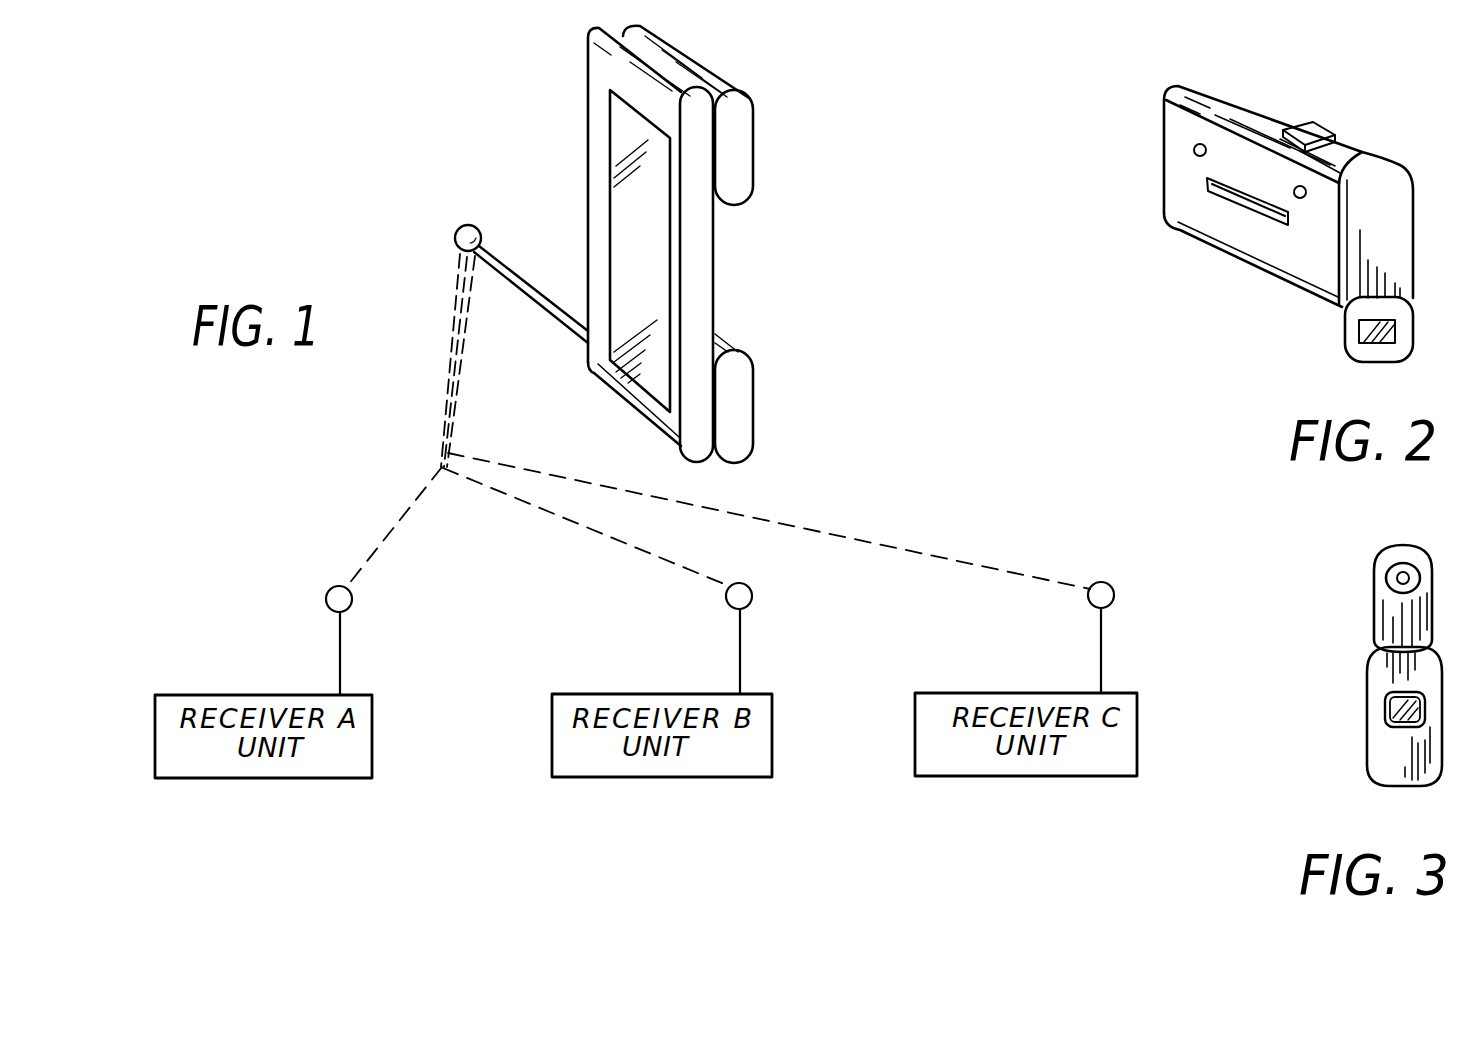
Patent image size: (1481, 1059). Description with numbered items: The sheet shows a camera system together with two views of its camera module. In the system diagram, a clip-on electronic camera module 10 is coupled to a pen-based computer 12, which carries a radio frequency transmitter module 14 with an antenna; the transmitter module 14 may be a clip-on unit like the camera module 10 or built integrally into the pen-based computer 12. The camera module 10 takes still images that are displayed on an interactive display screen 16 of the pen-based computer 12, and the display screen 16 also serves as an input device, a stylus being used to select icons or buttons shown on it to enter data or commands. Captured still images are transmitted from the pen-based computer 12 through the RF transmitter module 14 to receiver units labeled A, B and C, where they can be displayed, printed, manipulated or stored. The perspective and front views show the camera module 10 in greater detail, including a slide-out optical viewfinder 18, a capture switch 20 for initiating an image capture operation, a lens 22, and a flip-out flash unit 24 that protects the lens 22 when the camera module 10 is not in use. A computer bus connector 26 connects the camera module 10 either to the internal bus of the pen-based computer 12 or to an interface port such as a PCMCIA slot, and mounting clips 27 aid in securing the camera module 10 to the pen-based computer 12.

In FIG. 1, the electronic camera module 10 is at (778, 186).
In FIG. 2, the electronic camera module 10 is at (1222, 281).
In FIG. 1, the pen-based computer 12 is at (536, 159).
In FIG. 1, the radio frequency transmitter module 14 is at (775, 415).
In FIG. 1, the interactive display screen 16 is at (651, 261).
In FIG. 2, the slide-out optical viewfinder 18 is at (1410, 320).
In FIG. 2, the capture switch 20 is at (1313, 124).
In FIG. 3, the lens 22 is at (1385, 703).
In FIG. 3, the flip-out flash unit 24 is at (1388, 576).
In FIG. 2, the computer bus connector 26 is at (1207, 190).
In FIG. 2, the mounting clips 27 is at (1194, 150).